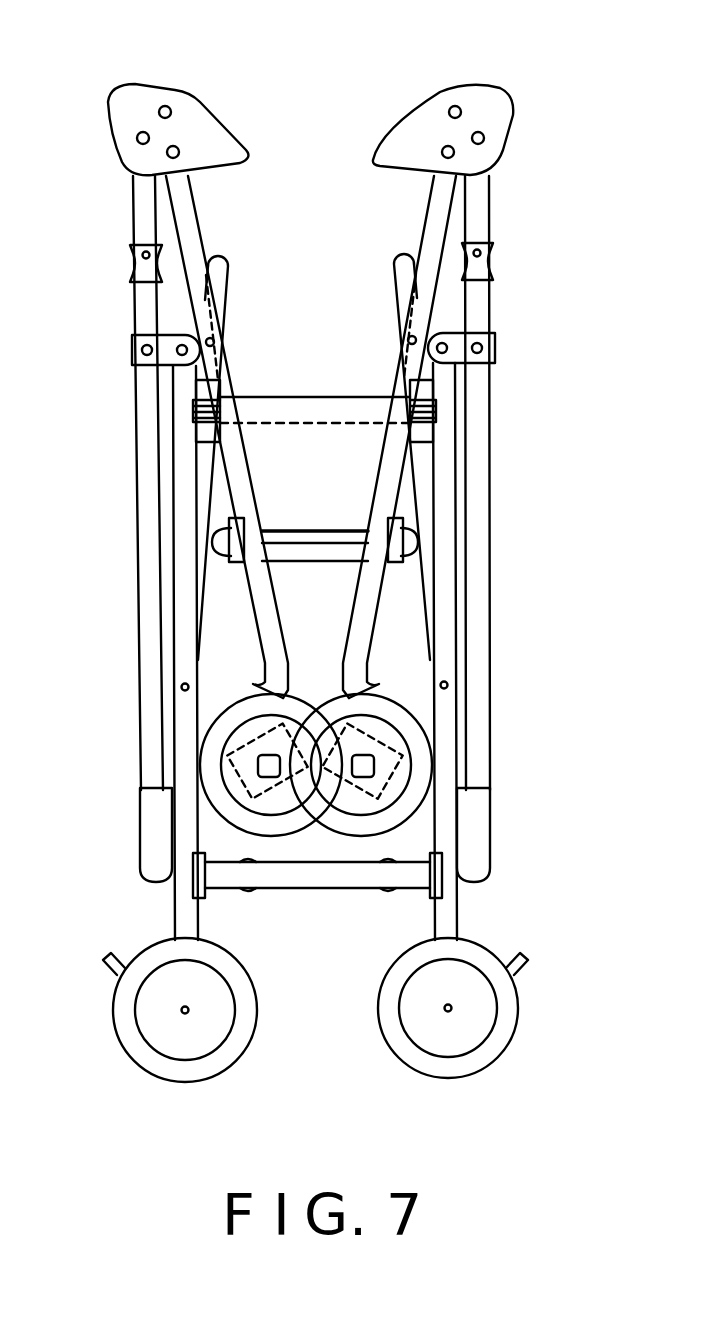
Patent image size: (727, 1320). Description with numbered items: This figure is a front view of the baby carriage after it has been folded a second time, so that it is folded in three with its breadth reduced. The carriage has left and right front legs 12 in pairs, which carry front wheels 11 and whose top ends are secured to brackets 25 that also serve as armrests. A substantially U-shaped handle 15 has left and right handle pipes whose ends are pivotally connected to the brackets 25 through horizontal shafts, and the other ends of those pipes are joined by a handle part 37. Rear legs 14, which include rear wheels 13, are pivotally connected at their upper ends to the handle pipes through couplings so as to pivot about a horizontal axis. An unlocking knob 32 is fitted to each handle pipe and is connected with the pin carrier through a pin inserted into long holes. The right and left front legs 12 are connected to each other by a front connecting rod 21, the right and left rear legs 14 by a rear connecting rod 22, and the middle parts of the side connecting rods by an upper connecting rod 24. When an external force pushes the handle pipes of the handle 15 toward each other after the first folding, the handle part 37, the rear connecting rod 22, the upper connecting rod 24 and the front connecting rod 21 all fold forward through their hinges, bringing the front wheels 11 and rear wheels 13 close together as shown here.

The front wheels 11 is at (207, 748).
The front legs 12 is at (200, 226).
The rear wheels 13 is at (516, 1012).
The rear legs 14 is at (185, 553).
The handle 15 is at (138, 483).
The front connecting rod 21 is at (315, 562).
The rear connecting rod 22 is at (320, 889).
The upper connecting rod 24 is at (290, 398).
The brackets 25 is at (207, 127).
The unlocking knob 32 is at (130, 262).
The handle part 37 is at (490, 873).